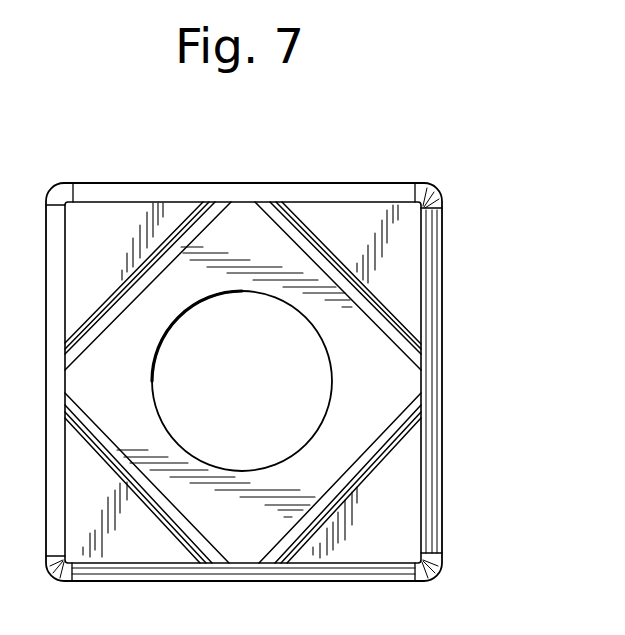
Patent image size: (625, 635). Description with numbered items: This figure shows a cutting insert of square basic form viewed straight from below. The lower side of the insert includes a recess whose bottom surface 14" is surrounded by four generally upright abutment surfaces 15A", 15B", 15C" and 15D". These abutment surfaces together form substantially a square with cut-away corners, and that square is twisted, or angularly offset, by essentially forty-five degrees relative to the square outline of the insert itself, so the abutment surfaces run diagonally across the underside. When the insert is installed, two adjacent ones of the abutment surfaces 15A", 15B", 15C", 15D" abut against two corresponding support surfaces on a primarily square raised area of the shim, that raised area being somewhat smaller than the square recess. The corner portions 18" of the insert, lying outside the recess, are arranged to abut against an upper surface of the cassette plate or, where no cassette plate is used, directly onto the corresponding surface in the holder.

The corner portion 18 is at (110, 238).
The bottom surface 14 is at (240, 230).
The abutment surface 15A is at (178, 245).
The abutment surface 15B is at (327, 262).
The abutment surface 15C is at (372, 448).
The abutment surface 15D is at (152, 493).